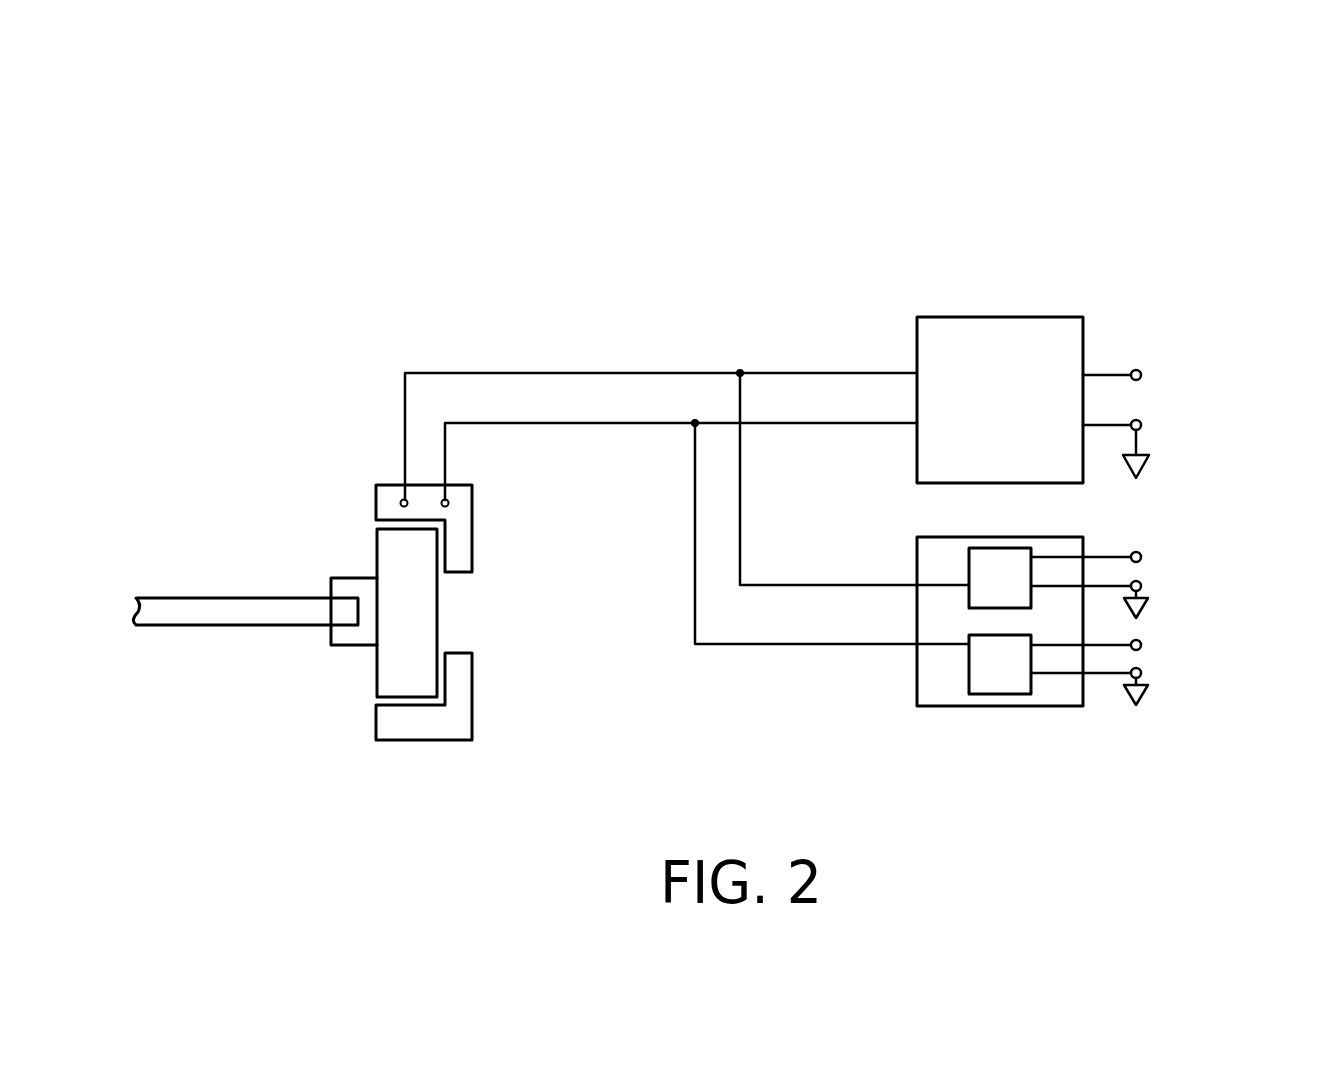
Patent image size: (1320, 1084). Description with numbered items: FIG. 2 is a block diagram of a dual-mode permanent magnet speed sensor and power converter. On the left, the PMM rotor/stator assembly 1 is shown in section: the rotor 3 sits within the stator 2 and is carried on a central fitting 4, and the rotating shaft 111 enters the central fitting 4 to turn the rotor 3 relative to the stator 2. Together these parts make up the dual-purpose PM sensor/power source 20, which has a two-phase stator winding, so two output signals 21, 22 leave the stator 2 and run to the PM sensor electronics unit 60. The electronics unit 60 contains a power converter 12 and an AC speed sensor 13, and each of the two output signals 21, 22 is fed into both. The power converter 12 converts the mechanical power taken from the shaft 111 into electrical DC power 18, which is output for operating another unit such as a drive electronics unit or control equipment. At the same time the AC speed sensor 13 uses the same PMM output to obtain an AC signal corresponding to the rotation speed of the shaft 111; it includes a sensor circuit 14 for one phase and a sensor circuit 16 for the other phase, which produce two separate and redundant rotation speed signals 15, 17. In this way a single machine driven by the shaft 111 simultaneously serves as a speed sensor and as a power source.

The rotor/stator assembly 1 is at (270, 696).
The stator 2 is at (388, 503).
The rotor 3 is at (390, 545).
The central fitting 4 is at (342, 588).
The shaft 111 is at (179, 605).
The dual-purpose PM sensor/power source 20 is at (428, 292).
The output signal 21 is at (475, 370).
The output signal 22 is at (572, 420).
The PM sensor electronics unit 60 is at (1000, 208).
The power converter 12 is at (945, 445).
The DC power 18 is at (1180, 377).
The AC speed sensor 13 is at (953, 689).
The sensor circuit 14 is at (983, 592).
The sensor circuit 16 is at (983, 657).
The rotation speed signal 15 is at (1172, 570).
The rotation speed signal 17 is at (1172, 657).